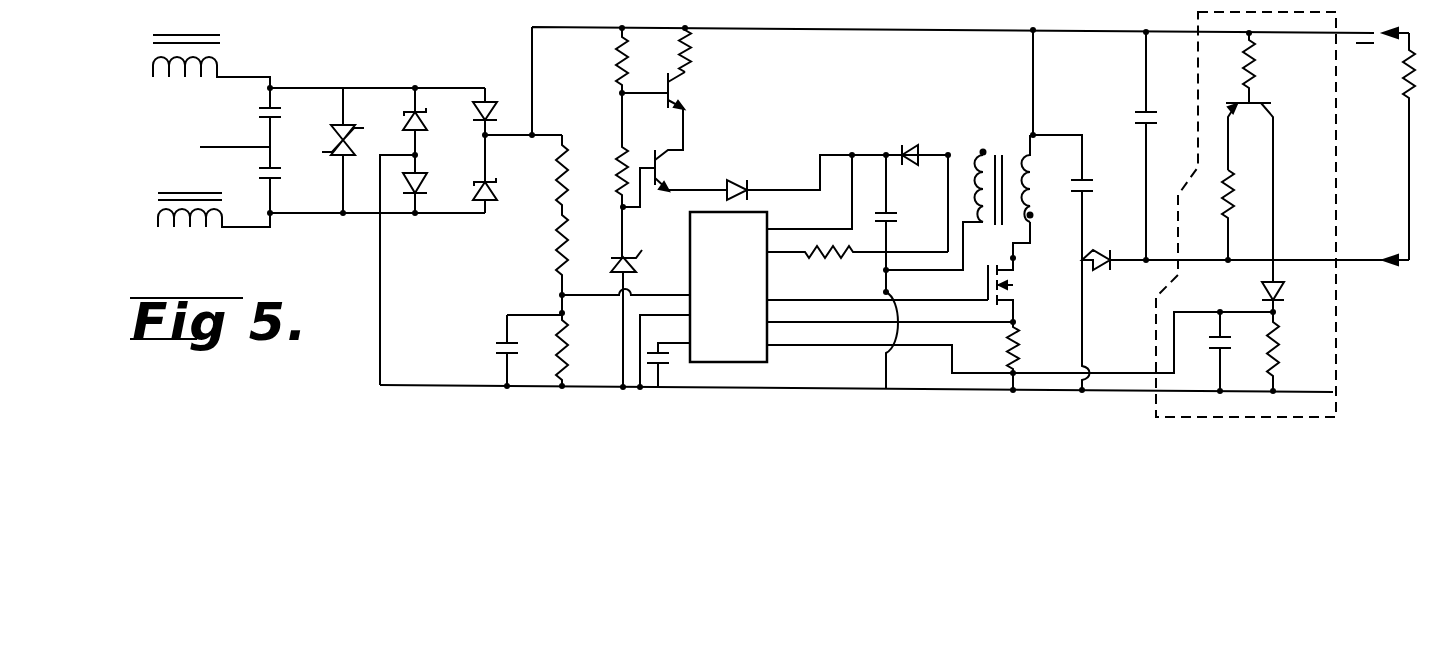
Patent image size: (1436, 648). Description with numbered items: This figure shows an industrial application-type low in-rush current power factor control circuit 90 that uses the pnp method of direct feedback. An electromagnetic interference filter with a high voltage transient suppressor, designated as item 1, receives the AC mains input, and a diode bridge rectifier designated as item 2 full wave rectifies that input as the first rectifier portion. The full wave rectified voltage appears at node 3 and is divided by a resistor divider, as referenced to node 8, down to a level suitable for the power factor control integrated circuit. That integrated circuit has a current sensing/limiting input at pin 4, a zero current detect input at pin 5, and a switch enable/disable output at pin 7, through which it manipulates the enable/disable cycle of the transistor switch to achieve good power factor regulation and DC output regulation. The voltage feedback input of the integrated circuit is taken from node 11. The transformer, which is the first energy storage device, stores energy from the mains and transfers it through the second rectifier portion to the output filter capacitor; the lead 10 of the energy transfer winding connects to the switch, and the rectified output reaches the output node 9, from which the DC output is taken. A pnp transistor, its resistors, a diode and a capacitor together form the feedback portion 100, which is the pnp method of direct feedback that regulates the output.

The electromagnetic interference filter and transient suppressor item 1 is at (415, 88).
The diode bridge rectifier item 2 is at (415, 213).
The node 3 is at (838, 27).
The pin 4 is at (558, 308).
The pin 5 is at (988, 290).
The pin 7 is at (1016, 322).
The node 8 is at (560, 388).
The output node 9 is at (1144, 263).
The secondary winding lead 10 is at (1038, 240).
The node 11 is at (824, 348).
The low in-rush current power factor control circuit 90 is at (356, 353).
The feedback portion 100 is at (1340, 396).